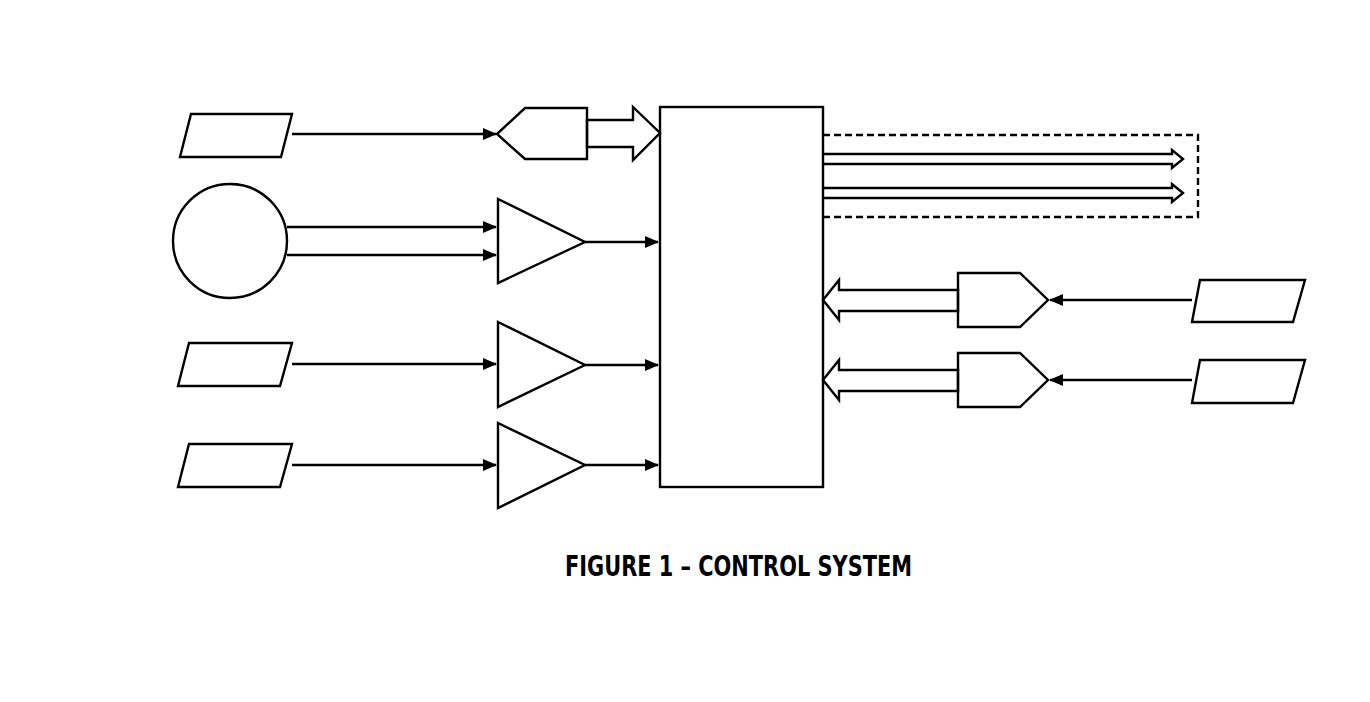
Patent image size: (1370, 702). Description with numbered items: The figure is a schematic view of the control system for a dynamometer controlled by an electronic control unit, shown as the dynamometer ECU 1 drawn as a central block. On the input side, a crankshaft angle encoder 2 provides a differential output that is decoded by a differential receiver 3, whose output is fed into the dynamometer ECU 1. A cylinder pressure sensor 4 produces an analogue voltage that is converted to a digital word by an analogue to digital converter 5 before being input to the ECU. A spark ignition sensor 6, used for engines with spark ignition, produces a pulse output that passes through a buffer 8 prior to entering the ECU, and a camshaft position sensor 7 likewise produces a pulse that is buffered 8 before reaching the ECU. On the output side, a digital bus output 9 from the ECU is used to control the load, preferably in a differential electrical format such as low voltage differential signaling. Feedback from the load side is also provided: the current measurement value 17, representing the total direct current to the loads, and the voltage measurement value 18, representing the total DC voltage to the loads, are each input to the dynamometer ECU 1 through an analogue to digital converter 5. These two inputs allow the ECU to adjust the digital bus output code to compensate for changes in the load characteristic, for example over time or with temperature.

The dynamometer ECU 1 is at (744, 265).
The crankshaft angle encoder 2 is at (234, 240).
The differential receiver 3 is at (544, 240).
The cylinder pressure sensor 4 is at (233, 130).
The analogue to digital converter 5 is at (557, 131).
The spark ignition sensor 6 is at (236, 361).
The camshaft position sensor 7 is at (236, 463).
The buffer 8 is at (544, 362).
The digital bus output 9 is at (1203, 168).
The current measurement value 17 is at (1274, 299).
The voltage measurement value 18 is at (1272, 384).